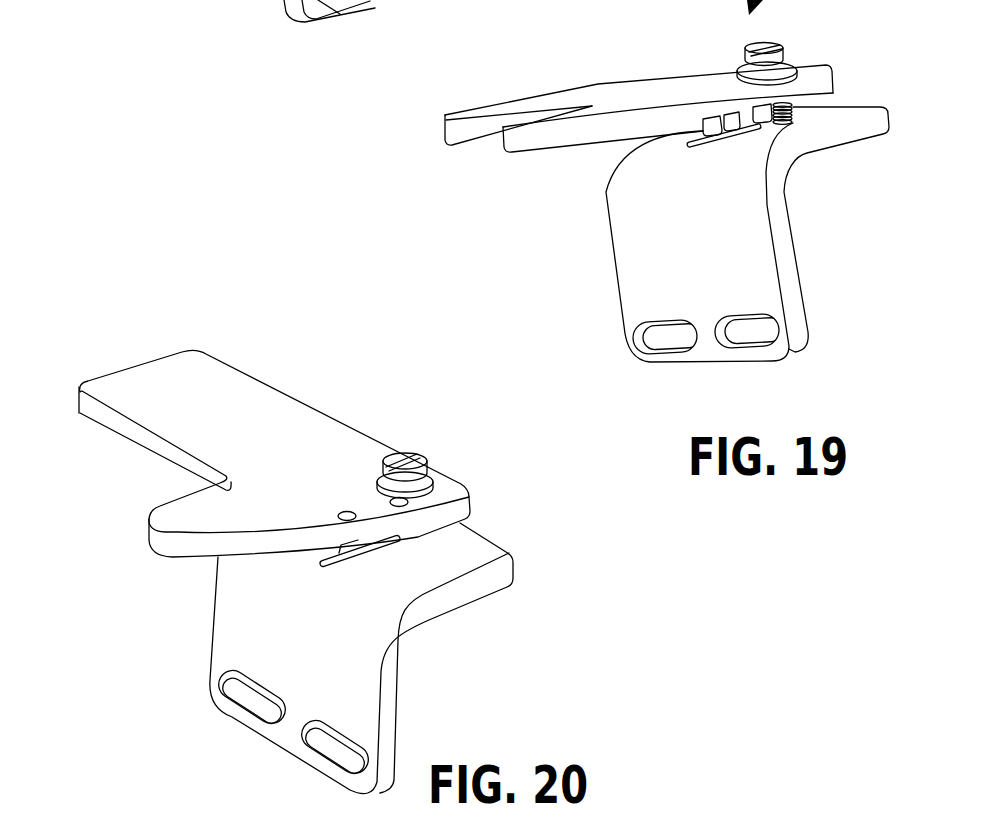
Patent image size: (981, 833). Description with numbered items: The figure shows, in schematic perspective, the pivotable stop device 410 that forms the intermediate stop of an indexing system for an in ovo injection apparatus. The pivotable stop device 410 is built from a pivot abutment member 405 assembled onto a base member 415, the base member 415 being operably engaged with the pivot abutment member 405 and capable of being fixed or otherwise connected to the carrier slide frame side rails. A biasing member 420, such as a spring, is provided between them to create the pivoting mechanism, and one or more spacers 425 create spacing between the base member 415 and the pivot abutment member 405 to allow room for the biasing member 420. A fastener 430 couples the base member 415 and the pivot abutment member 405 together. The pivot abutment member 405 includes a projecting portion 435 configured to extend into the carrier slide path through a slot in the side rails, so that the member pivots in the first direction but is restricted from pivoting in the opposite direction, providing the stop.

In FIG. 19, the pivot abutment member 405 is at (592, 92).
In FIG. 20, the pivot abutment member 405 is at (227, 400).
In FIG. 20, the pivotable stop device 410 is at (150, 715).
In FIG. 19, the base member 415 is at (766, 285).
In FIG. 20, the base member 415 is at (252, 636).
In FIG. 19, the biasing member 420 is at (828, 108).
In FIG. 19, the spacer 425 is at (703, 120).
In FIG. 19, the fastener 430 is at (782, 55).
In FIG. 20, the fastener 430 is at (417, 473).
In FIG. 19, the projecting portion 435 is at (518, 140).
In FIG. 20, the projecting portion 435 is at (147, 541).